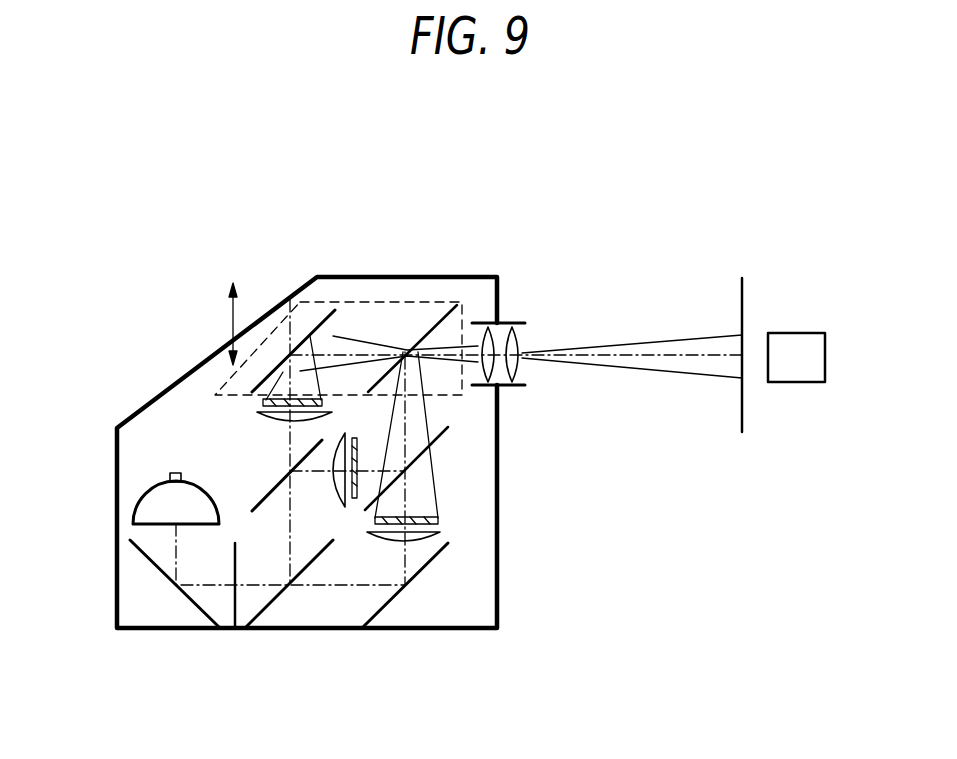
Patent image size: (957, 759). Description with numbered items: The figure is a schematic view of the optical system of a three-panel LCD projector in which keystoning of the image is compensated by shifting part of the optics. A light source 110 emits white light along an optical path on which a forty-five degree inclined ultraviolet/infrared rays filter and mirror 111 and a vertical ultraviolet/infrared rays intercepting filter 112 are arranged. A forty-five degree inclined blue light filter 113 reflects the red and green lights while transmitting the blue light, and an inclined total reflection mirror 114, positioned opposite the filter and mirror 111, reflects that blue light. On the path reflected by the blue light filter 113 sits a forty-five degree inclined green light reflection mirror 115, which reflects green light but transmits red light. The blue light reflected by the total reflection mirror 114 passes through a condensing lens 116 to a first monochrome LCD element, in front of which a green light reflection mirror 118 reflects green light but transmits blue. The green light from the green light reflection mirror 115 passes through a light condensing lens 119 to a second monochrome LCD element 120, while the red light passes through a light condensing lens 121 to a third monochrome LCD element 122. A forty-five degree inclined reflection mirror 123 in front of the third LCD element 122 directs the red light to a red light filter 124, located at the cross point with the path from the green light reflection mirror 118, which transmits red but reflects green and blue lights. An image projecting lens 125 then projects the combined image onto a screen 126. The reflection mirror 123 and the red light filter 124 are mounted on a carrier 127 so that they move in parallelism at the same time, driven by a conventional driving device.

The light source 110 is at (150, 511).
The ultraviolet/infrared rays filter and mirror 111 is at (187, 597).
The vertical ultraviolet/infrared rays intercepting filter 112 is at (232, 606).
The blue light filter 113 is at (268, 605).
The total reflection mirror 114 is at (415, 573).
The green light reflection mirror 115 is at (265, 492).
The condensing lens 116 is at (440, 532).
The green light reflection mirror 118 is at (427, 450).
The light condensing lens 119 is at (337, 481).
The second monochrome LCD element 120 is at (358, 442).
The light condensing lens 121 is at (258, 418).
The third monochrome LCD element 122 is at (262, 409).
The reflection mirror 123 is at (310, 302).
The red light filter 124 is at (438, 322).
The image projecting lens 125 is at (513, 345).
The screen 126 is at (743, 302).
The carrier 127 is at (377, 302).